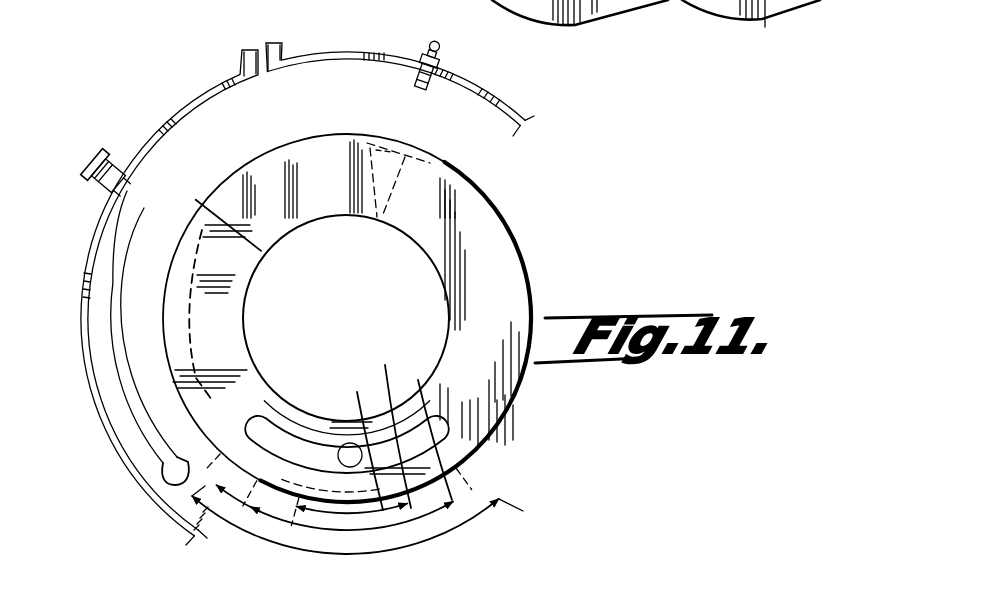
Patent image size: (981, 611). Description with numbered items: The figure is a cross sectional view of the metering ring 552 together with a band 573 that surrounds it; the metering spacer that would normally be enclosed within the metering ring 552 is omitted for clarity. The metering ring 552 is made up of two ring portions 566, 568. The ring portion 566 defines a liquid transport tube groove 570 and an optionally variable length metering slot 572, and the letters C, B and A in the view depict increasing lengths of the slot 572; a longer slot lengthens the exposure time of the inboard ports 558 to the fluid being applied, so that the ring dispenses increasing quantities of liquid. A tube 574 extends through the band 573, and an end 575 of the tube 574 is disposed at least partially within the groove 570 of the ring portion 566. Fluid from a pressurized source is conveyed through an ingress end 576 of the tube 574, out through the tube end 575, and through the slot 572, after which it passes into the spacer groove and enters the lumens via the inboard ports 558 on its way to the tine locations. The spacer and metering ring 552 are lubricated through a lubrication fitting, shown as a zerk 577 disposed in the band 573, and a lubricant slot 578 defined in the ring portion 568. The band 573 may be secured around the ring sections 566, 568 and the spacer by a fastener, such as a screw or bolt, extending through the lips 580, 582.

The metering ring 552 is at (391, 55).
The inboard ports 558 is at (358, 58).
The ring portion 566 is at (198, 202).
The ring portion 568 is at (518, 238).
The liquid transport tube groove 570 is at (178, 286).
The metering slot 572 is at (427, 541).
The band 573 is at (230, 80).
The tube 574 is at (122, 156).
The tube end 575 is at (188, 461).
The ingress end 576 is at (87, 163).
The zerk 577 is at (445, 66).
The lubricant slot 578 is at (409, 143).
The lip 580 is at (247, 50).
The lip 582 is at (272, 43).